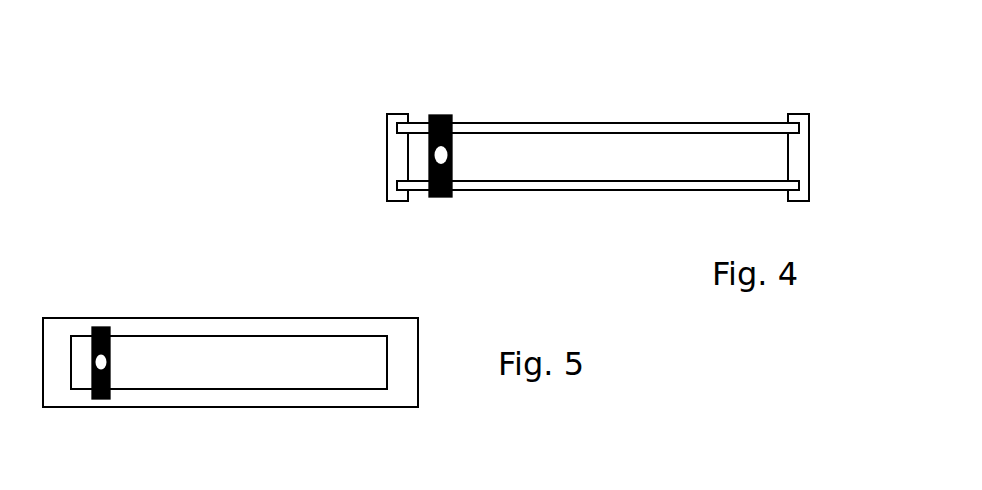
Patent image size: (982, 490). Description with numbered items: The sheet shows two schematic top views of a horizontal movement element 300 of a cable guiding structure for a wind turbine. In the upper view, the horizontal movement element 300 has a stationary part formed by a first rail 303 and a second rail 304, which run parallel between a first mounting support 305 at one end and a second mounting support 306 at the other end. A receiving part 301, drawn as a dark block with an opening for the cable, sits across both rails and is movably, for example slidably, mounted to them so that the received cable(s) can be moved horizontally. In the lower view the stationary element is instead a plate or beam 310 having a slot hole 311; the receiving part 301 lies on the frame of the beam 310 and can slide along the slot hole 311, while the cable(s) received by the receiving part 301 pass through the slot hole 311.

In FIG. 4, the horizontal movement element 300 is at (583, 125).
In FIG. 5, the horizontal movement element 300 is at (271, 348).
In FIG. 4, the receiving part 301 is at (441, 115).
In FIG. 5, the receiving part 301 is at (98, 400).
In FIG. 4, the first rail 303 is at (633, 123).
In FIG. 4, the second rail 304 is at (625, 190).
In FIG. 4, the first mounting support 305 is at (398, 158).
In FIG. 4, the second mounting support 306 is at (797, 157).
In FIG. 5, the beam 310 is at (379, 323).
In FIG. 5, the slot hole 311 is at (370, 367).